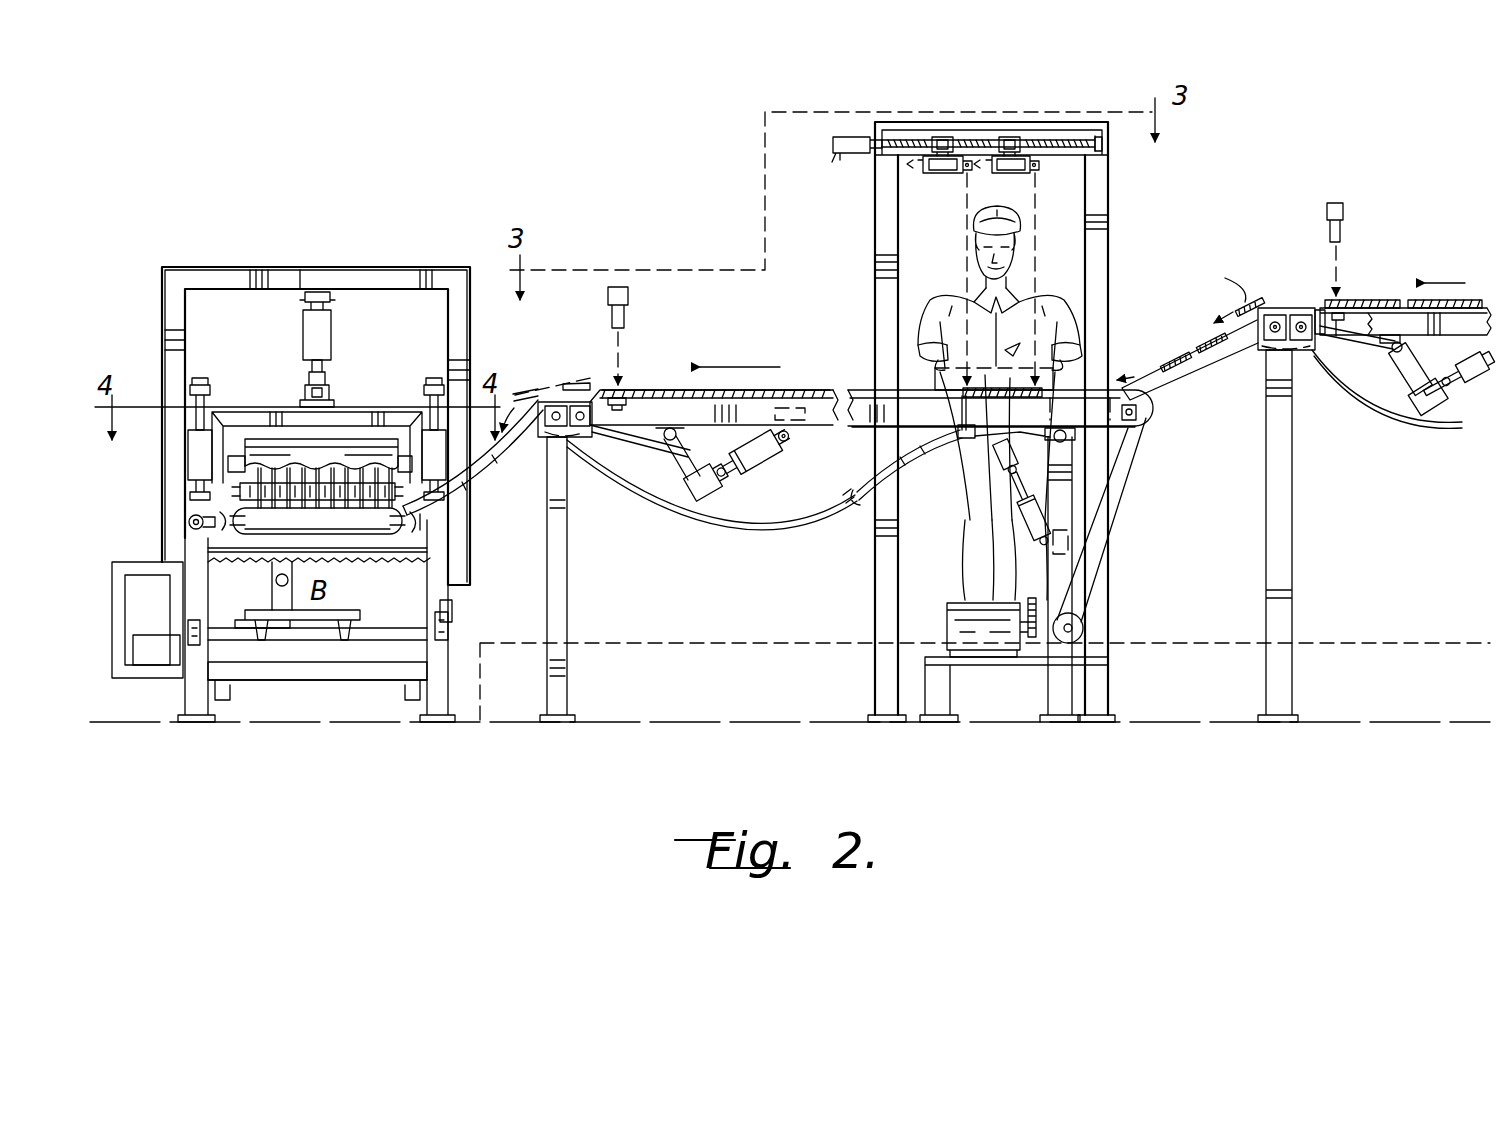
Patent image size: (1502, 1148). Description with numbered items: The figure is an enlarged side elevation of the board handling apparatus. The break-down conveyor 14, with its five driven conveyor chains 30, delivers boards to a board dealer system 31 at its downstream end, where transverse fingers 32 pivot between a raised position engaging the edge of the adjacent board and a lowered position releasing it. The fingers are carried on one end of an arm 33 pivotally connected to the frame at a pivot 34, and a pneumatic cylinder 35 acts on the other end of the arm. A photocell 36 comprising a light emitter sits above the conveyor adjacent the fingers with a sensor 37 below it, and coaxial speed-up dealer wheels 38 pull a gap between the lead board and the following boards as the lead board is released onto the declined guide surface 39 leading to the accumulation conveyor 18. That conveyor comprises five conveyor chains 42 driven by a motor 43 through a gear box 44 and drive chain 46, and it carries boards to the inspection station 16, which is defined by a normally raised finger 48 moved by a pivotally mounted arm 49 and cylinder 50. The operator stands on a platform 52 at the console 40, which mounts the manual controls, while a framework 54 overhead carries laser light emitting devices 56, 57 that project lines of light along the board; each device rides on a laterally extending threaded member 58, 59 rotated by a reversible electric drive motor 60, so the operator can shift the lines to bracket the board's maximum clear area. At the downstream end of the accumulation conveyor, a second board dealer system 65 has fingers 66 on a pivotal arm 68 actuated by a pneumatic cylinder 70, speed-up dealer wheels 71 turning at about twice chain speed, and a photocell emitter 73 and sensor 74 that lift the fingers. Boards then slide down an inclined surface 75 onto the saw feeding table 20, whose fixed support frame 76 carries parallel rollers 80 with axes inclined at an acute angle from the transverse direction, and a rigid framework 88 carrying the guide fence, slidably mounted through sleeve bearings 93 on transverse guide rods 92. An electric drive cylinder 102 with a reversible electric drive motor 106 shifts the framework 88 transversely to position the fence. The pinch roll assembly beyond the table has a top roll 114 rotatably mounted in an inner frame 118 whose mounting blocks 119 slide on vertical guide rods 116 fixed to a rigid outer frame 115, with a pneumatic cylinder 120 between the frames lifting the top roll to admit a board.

The break-down conveyor 14 is at (1447, 272).
The inspection station 16 is at (975, 338).
The accumulation conveyor 18 is at (792, 372).
The saw feeding table 20 is at (218, 512).
The driven conveyor chains 30 is at (1396, 417).
The board dealer system 31 is at (1277, 282).
The transverse fingers 32 is at (1305, 306).
The arm 33 is at (1383, 348).
The pivotal connection 34 is at (1405, 347).
The pneumatic cylinder 35 is at (1460, 378).
The photocell 36 is at (1327, 213).
The sensor 37 is at (1333, 325).
The speed-up dealer wheels 38 is at (1320, 340).
The declined guide surface 39 is at (1196, 366).
The console 40 is at (940, 374).
The conveyor chains 42 is at (802, 520).
The motor 43 is at (946, 606).
The gear box 44 is at (1086, 630).
The drive chain 46 is at (1130, 455).
The finger 48 is at (972, 432).
The pivotally mounted arm 49 is at (1012, 491).
The cylinder 50 is at (1032, 522).
The platform 52 is at (826, 640).
The framework 54 is at (875, 212).
The laser light emitting device 56 is at (940, 176).
The laser light emitting device 57 is at (1006, 176).
The threaded member 58 is at (925, 145).
The threaded member 59 is at (1065, 145).
The reversible electric drive motor 60 is at (833, 144).
The second board dealer system 65 is at (553, 386).
The fingers 66 is at (595, 400).
The pivotal arm 68 is at (652, 440).
The pneumatic cylinder 70 is at (777, 462).
The speed-up dealer wheels 71 is at (599, 432).
The photocell emitter 73 is at (610, 318).
The sensor 74 is at (632, 396).
The inclined surface 75 is at (493, 470).
The fixed support frame 76 is at (446, 612).
The rollers 80 is at (372, 535).
The rigid framework 88 is at (300, 482).
The guide rods 92 is at (372, 642).
The sleeve bearings 93 is at (302, 622).
The electric drive cylinder 102 is at (243, 666).
The reversible electric drive motor 106 is at (162, 648).
The top roll 114 is at (278, 440).
The rigid outer frame 115 is at (218, 268).
The vertical guide rods 116 is at (215, 415).
The inner frame 118 is at (360, 412).
The mounting blocks 119 is at (188, 456).
The pneumatic cylinder 120 is at (331, 332).